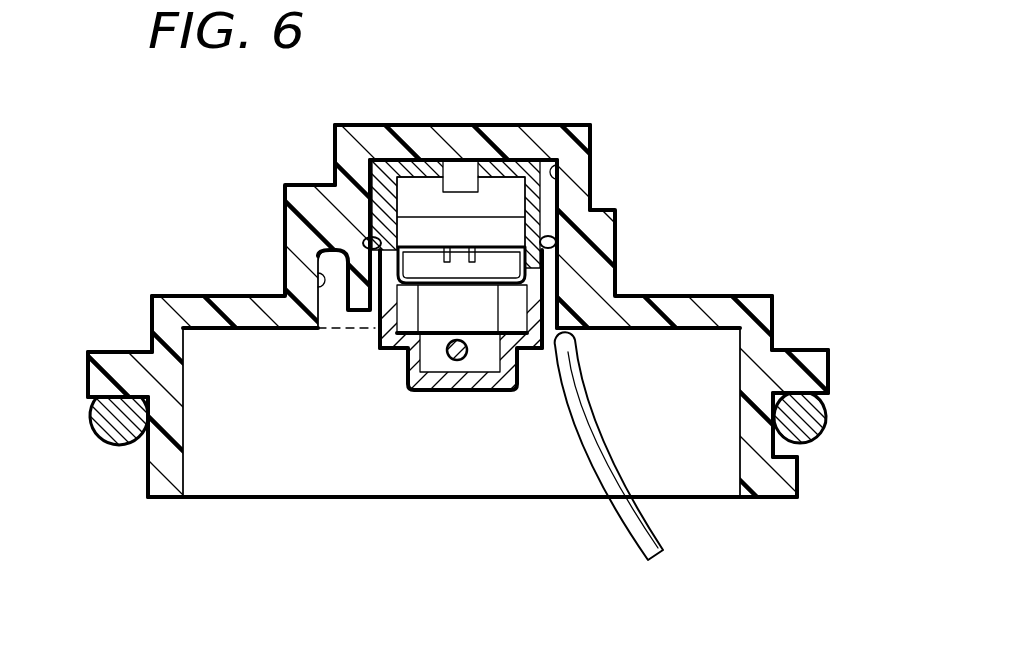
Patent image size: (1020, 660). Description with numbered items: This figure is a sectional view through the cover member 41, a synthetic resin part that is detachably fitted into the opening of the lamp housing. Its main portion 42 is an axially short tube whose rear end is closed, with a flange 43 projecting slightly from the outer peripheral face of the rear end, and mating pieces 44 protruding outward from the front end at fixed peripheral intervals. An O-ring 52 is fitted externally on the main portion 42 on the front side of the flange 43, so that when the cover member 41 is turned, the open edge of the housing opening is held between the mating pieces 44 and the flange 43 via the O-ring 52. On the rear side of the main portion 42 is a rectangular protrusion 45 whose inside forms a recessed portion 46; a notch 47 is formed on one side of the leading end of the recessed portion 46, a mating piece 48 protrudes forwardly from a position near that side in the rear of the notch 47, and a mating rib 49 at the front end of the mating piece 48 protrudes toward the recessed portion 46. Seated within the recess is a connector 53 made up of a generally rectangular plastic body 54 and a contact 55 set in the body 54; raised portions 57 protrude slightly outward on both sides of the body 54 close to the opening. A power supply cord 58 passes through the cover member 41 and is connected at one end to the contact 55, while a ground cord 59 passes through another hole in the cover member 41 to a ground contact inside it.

The cover member 41 is at (152, 300).
The main portion 42 is at (158, 469).
The flange 43 is at (90, 383).
The mating pieces 44 is at (797, 473).
The protrusion 45 is at (495, 124).
The recessed portion 46 is at (558, 165).
The notch 47 is at (318, 273).
The mating piece 48 is at (343, 300).
The mating rib 49 is at (380, 300).
The O-ring 52 is at (827, 423).
The connector 53 is at (483, 387).
The body 54 is at (528, 170).
The contact 55 is at (462, 280).
The raised portions 57 is at (353, 243).
The power supply cord 58 is at (457, 360).
The ground cord 59 is at (603, 482).